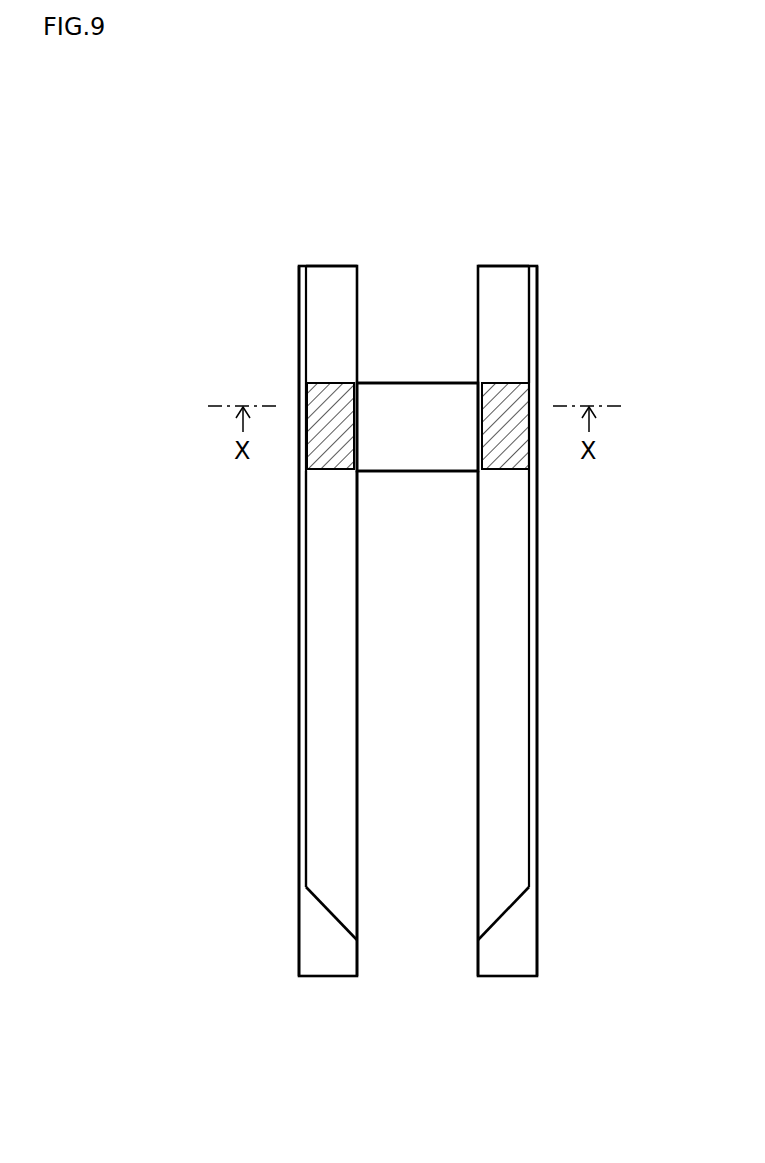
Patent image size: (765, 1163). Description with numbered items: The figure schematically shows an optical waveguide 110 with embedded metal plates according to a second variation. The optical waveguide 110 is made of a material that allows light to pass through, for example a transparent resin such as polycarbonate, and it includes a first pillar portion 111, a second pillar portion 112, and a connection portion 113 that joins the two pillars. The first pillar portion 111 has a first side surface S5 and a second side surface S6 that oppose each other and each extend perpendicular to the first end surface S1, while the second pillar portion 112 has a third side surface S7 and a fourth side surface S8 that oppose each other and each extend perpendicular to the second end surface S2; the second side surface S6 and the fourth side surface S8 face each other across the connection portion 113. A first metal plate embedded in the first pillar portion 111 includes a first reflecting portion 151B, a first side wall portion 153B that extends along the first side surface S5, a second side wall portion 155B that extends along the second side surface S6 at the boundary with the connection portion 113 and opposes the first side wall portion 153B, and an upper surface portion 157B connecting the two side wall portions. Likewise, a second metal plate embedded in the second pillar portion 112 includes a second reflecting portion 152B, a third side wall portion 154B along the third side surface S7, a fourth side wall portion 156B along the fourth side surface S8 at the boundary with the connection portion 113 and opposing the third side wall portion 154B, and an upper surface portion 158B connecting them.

The optical waveguide 110 is at (552, 740).
The first pillar portion 111 is at (512, 482).
The second pillar portion 112 is at (323, 600).
The connection portion 113 is at (387, 474).
The first reflecting portion 151B is at (512, 908).
The second reflecting portion 152B is at (325, 908).
The first side wall portion 153B is at (530, 364).
The third side wall portion 154B is at (305, 587).
The second side wall portion 155B is at (480, 411).
The fourth side wall portion 156B is at (354, 407).
The upper surface portion 157B is at (513, 404).
The upper surface portion 158B is at (320, 400).
The first end surface S1 is at (503, 264).
The second end surface S2 is at (335, 264).
The first side surface S5 is at (537, 593).
The second side surface S6 is at (476, 605).
The third side surface S7 is at (298, 742).
The fourth side surface S8 is at (358, 688).